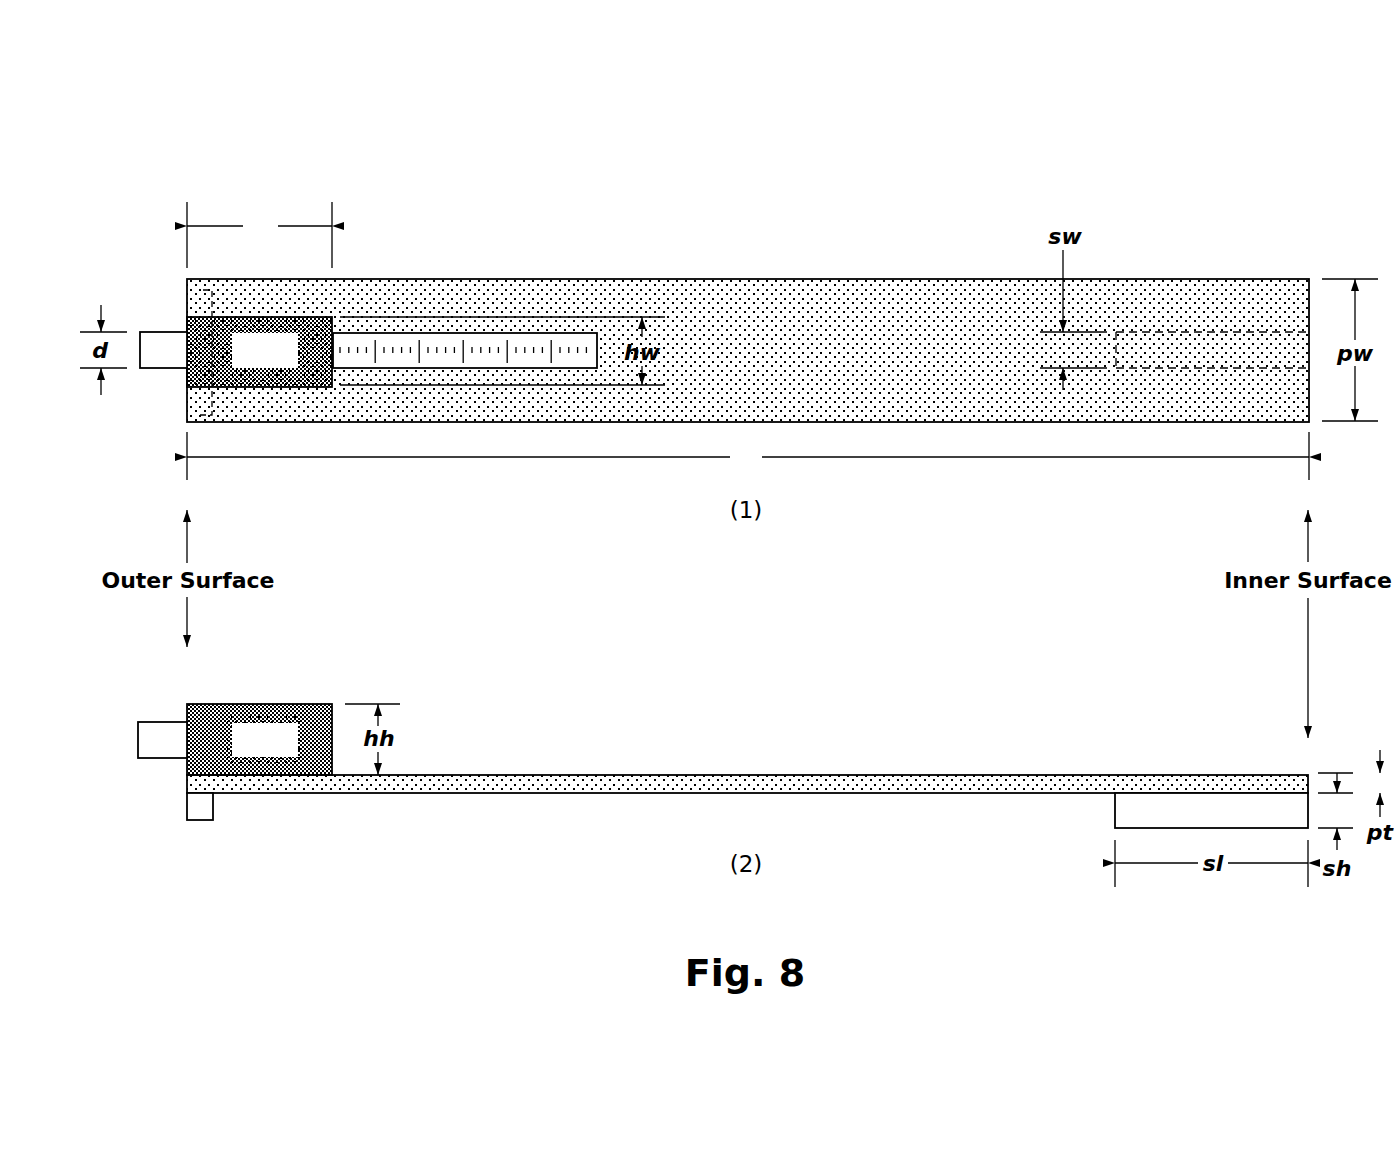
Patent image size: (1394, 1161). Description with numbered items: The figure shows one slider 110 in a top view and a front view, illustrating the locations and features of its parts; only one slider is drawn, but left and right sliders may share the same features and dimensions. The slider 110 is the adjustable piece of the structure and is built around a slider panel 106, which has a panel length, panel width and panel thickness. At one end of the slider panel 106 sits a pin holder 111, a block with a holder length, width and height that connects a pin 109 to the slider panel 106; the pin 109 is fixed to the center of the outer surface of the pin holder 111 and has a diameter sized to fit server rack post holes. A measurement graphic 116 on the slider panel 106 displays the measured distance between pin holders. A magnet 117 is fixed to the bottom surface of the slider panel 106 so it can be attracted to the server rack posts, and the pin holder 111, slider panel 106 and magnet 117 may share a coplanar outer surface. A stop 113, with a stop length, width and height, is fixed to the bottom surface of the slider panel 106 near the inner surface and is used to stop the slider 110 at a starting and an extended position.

The slider 110 is at (187, 170).
The slider panel 106 is at (745, 782).
The pin 109 is at (152, 343).
The pin holder 111 is at (259, 546).
The stop 113 is at (1211, 810).
The measurement graphic 116 is at (442, 343).
The magnet 117 is at (197, 405).